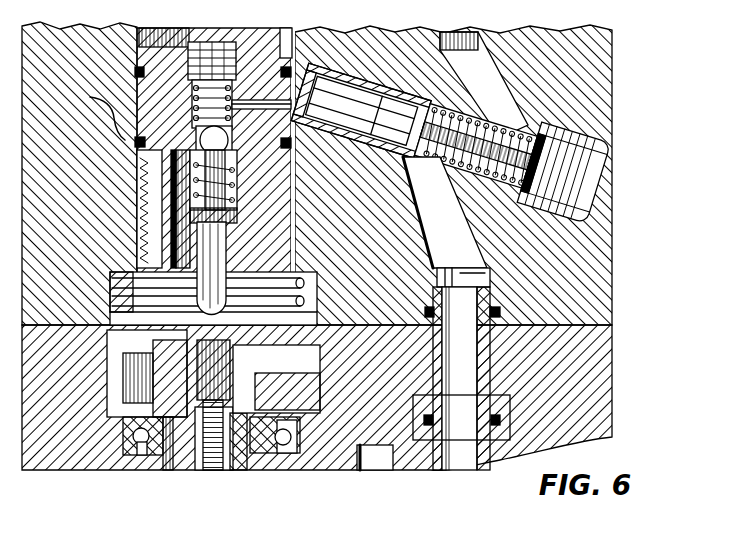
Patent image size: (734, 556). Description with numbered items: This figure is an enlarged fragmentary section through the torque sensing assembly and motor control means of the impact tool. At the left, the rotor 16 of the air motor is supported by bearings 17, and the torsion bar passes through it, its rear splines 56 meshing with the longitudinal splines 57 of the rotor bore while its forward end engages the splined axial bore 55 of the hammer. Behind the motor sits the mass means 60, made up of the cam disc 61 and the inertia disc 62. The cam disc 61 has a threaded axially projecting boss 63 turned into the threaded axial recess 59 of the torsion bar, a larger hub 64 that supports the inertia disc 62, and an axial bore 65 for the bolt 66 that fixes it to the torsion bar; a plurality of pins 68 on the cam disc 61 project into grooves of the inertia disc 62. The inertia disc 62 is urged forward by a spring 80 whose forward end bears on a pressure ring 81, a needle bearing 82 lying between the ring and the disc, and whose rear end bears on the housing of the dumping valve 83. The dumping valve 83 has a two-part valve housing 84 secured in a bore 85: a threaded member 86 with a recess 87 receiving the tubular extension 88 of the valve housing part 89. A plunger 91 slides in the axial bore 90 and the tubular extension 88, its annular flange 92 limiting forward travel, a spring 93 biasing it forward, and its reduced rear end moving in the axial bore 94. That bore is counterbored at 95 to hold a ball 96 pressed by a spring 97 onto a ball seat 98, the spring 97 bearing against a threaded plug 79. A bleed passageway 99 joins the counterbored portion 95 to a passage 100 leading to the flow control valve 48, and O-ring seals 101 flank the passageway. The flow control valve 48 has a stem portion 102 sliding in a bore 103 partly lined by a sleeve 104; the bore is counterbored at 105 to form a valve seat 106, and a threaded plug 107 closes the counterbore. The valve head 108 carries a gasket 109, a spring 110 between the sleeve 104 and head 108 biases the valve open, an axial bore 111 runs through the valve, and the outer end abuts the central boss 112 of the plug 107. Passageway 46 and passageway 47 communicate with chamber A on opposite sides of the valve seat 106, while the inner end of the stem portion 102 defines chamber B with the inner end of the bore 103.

The rotor 16 is at (32, 470).
The bearings 17 is at (128, 445).
The passageway 46 is at (494, 68).
The passageway 47 is at (468, 280).
The flow control valve 48 is at (621, 176).
The axial bore 55 is at (184, 470).
The splines 56 is at (168, 455).
The longitudinal splines 57 is at (160, 450).
The threaded axial recess 59 is at (268, 472).
The mass means 60 is at (98, 386).
The cam disc 61 is at (110, 405).
The inertia disc 62 is at (118, 348).
The axially projecting boss 63 is at (250, 470).
The hub 64 is at (276, 379).
The axial bore 65 is at (222, 470).
The bolt 66 is at (214, 470).
The pins 68 is at (132, 370).
The threaded plug 79 is at (216, 46).
The spring 80 is at (138, 288).
The pressure ring 81 is at (350, 338).
The needle bearing 82 is at (368, 440).
The dumping valve 83 is at (120, 89).
The valve housing 84 is at (140, 252).
The bore 85 is at (150, 182).
The threaded member 86 is at (148, 230).
The recess 87 is at (150, 205).
The tubular extension 88 is at (140, 147).
The valve housing part 89 is at (140, 33).
The axial bore 90 is at (213, 298).
The plunger 91 is at (205, 262).
The annular flange 92 is at (240, 226).
The spring 93 is at (240, 205).
The axial bore 94 is at (236, 155).
The counterbored portion 95 is at (192, 102).
The ball 96 is at (232, 110).
The spring 97 is at (146, 71).
The ball seat 98 is at (200, 137).
The bleed passageway 99 is at (250, 102).
The passage 100 is at (365, 97).
The O-ring seals 101 is at (286, 26).
The stem portion 102 is at (427, 79).
The bore 103 is at (368, 89).
The sleeve 104 is at (440, 173).
The counterbore 105 is at (562, 150).
The valve seat 106 is at (506, 106).
The threaded plug 107 is at (632, 120).
The valve head 108 is at (463, 216).
The gasket 109 is at (476, 230).
The spring 110 is at (420, 192).
The axial bore 111 is at (465, 91).
The central boss 112 is at (570, 209).
The chamber A is at (448, 216).
The chamber B is at (321, 149).